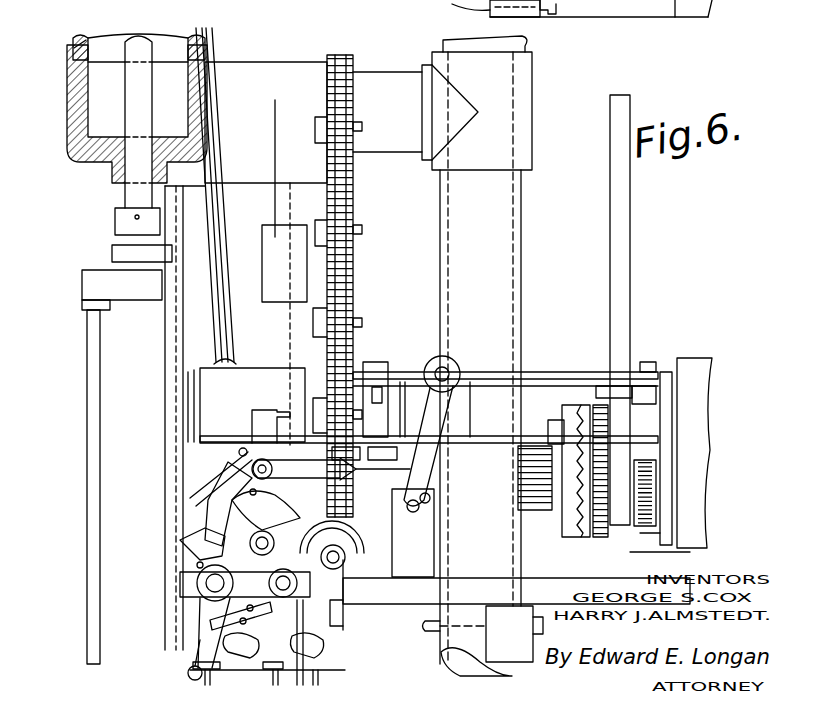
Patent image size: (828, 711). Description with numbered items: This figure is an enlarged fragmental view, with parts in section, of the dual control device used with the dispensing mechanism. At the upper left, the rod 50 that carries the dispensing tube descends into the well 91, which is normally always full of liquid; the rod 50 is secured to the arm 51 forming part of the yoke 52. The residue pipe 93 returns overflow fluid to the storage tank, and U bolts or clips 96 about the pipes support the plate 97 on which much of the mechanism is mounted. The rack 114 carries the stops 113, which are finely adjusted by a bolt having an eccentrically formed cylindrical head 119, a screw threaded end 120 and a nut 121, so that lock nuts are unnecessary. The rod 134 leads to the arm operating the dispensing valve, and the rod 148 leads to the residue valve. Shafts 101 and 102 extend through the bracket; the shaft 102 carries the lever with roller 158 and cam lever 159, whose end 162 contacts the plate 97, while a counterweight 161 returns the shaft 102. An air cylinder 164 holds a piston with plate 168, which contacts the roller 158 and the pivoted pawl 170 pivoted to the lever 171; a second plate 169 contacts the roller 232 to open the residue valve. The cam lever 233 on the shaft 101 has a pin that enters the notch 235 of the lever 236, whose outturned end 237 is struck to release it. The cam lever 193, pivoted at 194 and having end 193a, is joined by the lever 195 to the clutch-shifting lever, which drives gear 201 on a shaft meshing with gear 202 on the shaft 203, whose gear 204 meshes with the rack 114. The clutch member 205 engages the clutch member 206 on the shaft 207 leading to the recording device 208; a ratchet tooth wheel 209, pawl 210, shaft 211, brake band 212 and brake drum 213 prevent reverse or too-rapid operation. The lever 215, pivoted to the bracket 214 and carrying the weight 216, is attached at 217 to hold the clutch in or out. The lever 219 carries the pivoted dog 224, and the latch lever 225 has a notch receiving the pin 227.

The rod 50 is at (135, 103).
The well 91 is at (80, 40).
The rod 134 is at (197, 36).
The end of cam lever 162 is at (285, 276).
The air cylinder 164 is at (266, 25).
The counterweight 161 is at (340, 622).
The arm 51 is at (118, 233).
The yoke 52 is at (92, 286).
The plate 169 is at (200, 647).
The rod 148 is at (228, 272).
The rack 114 is at (350, 194).
The stops 113 is at (315, 140).
The eccentrically formed cylindrical head 119 is at (320, 120).
The screw threaded end 120 is at (362, 127).
The nut 121 is at (358, 112).
The residue pipe 93 is at (505, 229).
The U bolts or clips 96 is at (430, 656).
The plate 97 is at (620, 3).
The pawl 210 is at (612, 330).
The recording device 208 is at (700, 425).
The shaft 211 is at (580, 400).
The ratchet tooth wheel 209 is at (570, 400).
The shaft 207 is at (560, 400).
The gear 201 is at (556, 420).
The weight 216 is at (450, 358).
The lever 215 is at (436, 358).
The attachment point 217 is at (430, 500).
The shaft 203 is at (459, 462).
The shaft 102 is at (413, 533).
The bracket 214 is at (379, 463).
The gear 204 is at (302, 416).
The lever 195 is at (310, 470).
The lever 236 is at (232, 460).
The notch 235 is at (206, 496).
The outturned end 237 is at (192, 500).
The cam lever 193 is at (196, 538).
The end of cam lever 193a is at (200, 556).
The shaft 101 is at (196, 566).
The cam lever 233 is at (197, 583).
The roller 232 is at (185, 600).
The latch lever 225 is at (205, 630).
The pin 227 is at (205, 647).
The lever 219 is at (204, 660).
The pivot point 194 is at (265, 510).
The roller 158 is at (278, 588).
The pivoted dog 224 is at (247, 618).
The cam lever 159 is at (340, 562).
The lever 171 is at (320, 650).
The pivoted pawl 170 is at (300, 666).
The plate 168 is at (330, 680).
The gear 202 is at (530, 512).
The clutch member 205 is at (576, 537).
The clutch member 206 is at (632, 537).
The brake drum 213 is at (656, 514).
The brake band 212 is at (660, 540).